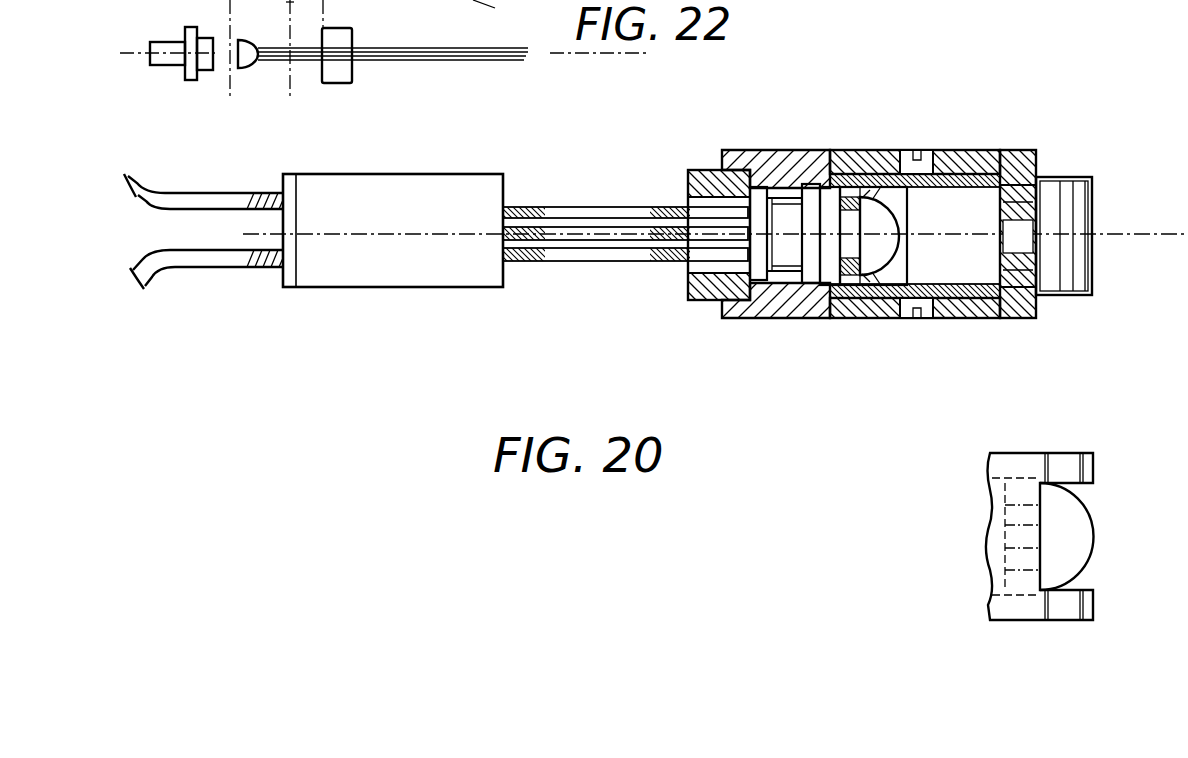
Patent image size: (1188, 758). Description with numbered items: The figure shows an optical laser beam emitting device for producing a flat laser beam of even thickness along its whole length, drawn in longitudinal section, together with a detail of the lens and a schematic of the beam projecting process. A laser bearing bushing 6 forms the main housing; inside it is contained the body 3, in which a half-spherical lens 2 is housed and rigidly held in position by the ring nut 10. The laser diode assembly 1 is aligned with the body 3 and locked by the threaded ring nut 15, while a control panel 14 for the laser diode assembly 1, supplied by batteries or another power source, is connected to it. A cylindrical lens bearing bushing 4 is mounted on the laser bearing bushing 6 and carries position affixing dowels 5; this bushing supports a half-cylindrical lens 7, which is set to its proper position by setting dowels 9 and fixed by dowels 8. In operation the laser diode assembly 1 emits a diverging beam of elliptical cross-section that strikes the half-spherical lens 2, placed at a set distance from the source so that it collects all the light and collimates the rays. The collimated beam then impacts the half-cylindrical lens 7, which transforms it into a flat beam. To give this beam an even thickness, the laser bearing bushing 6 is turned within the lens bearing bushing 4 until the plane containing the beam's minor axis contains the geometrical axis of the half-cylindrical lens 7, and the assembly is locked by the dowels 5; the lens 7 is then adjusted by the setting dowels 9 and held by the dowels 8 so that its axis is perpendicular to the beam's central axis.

In FIG. 20, the laser diode assembly 1 is at (723, 302).
In FIG. 22, the half-spherical lens 2 is at (247, 68).
In FIG. 20, the half-spherical lens 2 is at (817, 315).
In FIG. 20, the body 3 is at (867, 317).
In FIG. 20, the lens bearing bushing 4 is at (1013, 150).
In FIG. 20, the position affixing dowels 5 is at (927, 150).
In FIG. 20, the laser bearing bushing 6 is at (790, 168).
In FIG. 22, the half-cylindrical lens 7 is at (350, 72).
In FIG. 20, the half-cylindrical lens 7 is at (1080, 270).
In FIG. 20, the fixing dowels 8 is at (1073, 467).
In FIG. 20, the setting dowels 9 is at (1040, 178).
In FIG. 20, the ring nut 10 is at (858, 180).
In FIG. 20, the control panel 14 is at (407, 274).
In FIG. 20, the threaded ring nut 15 is at (690, 290).